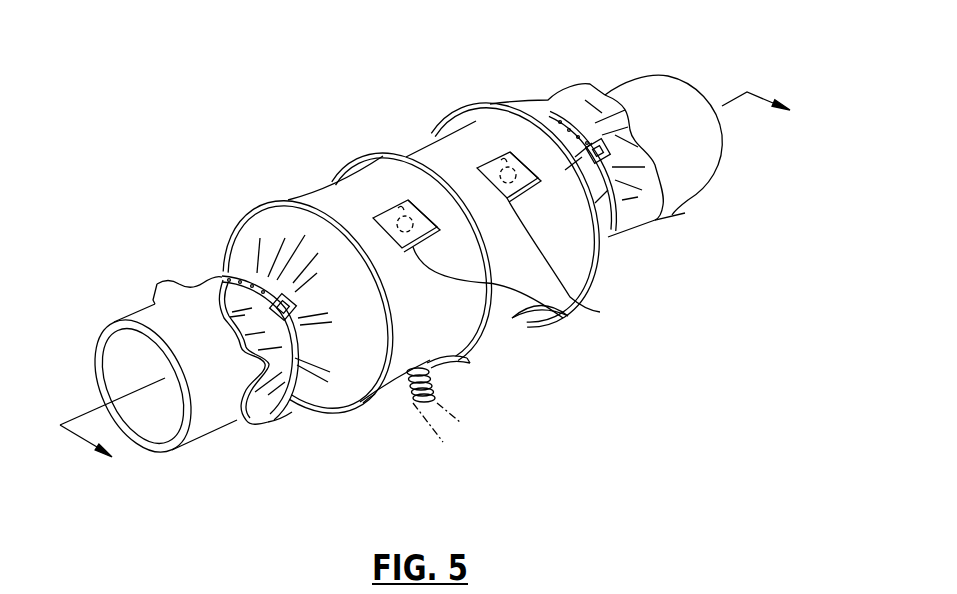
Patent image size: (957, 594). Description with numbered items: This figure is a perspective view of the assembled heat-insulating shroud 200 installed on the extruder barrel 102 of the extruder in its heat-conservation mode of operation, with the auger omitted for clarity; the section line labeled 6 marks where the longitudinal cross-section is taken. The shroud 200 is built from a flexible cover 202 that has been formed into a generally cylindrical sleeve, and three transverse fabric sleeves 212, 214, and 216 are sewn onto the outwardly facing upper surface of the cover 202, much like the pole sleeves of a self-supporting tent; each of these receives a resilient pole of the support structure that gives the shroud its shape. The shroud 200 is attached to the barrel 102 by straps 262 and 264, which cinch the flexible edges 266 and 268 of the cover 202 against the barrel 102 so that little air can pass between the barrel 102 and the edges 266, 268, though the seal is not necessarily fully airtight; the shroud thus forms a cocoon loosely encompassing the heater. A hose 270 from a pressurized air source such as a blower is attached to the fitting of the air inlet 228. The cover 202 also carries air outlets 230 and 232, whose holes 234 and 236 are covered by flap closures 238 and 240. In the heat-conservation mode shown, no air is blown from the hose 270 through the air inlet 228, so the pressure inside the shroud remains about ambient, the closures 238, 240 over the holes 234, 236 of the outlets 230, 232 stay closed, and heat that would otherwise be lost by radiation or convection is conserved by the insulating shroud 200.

The section line 6- 6 is at (433, 286).
The extruder barrel 102 is at (148, 318).
The heat-insulating shroud 200 is at (210, 192).
The flexible cover 202 is at (273, 220).
The transverse fabric sleeve 212 is at (378, 398).
The transverse fabric sleeve 214 is at (470, 358).
The transverse fabric sleeve 216 is at (592, 262).
The air inlet 228 is at (427, 333).
The air outlet 230 is at (410, 178).
The air outlet 232 is at (516, 130).
The hole 234 is at (400, 204).
The hole 236 is at (508, 154).
The closure 238 is at (563, 318).
The closure 240 is at (583, 300).
The strap 262 is at (298, 410).
The strap 264 is at (553, 120).
The flexible edge 266 is at (157, 281).
The flexible edge 268 is at (668, 202).
The hose 270 is at (435, 392).